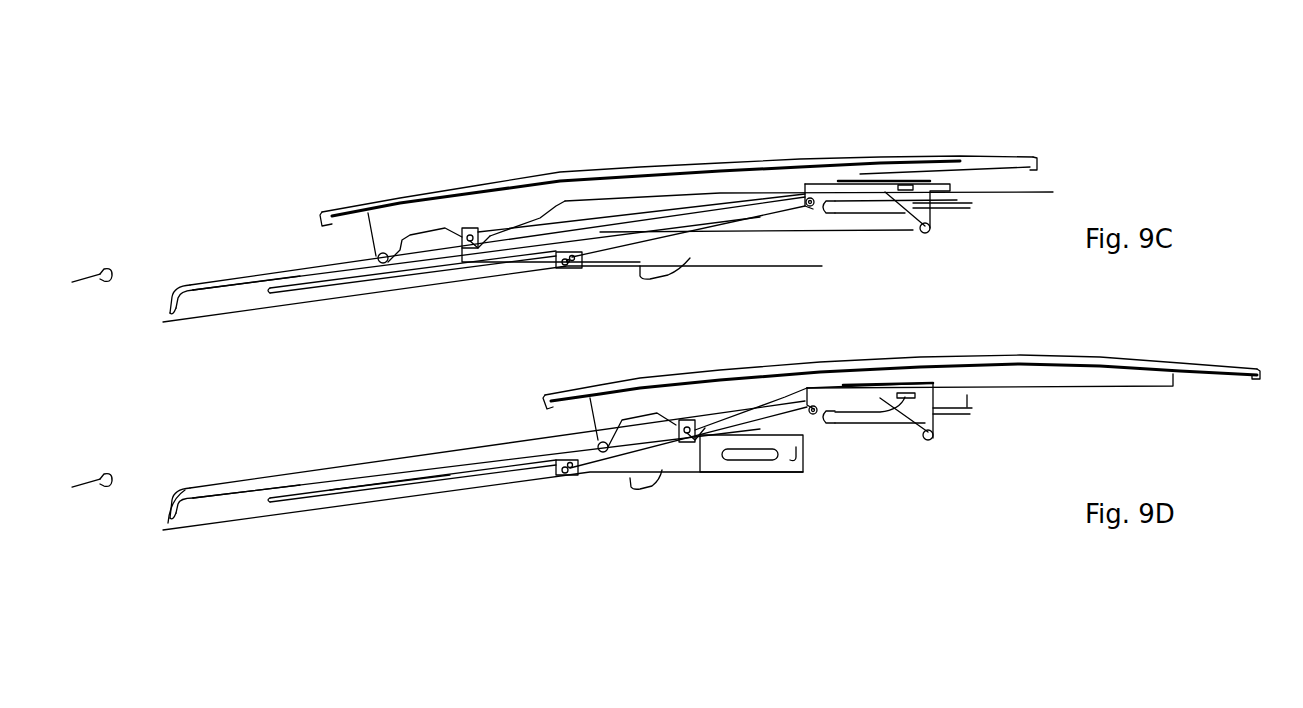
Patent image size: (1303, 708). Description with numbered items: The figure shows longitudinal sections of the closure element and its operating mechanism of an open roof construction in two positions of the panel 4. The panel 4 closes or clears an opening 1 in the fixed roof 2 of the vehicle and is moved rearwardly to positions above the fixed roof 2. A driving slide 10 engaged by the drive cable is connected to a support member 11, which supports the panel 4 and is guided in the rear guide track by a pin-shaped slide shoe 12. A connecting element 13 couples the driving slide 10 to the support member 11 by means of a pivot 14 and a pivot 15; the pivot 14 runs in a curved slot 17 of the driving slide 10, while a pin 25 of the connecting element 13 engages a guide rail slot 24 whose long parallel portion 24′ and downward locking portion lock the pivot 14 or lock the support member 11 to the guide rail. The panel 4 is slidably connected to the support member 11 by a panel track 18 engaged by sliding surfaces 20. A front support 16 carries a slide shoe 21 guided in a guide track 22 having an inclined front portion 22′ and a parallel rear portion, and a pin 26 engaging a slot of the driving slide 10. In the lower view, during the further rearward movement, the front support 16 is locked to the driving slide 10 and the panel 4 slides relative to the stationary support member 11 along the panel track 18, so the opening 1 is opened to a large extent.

In FIG. 9C, the roof opening 1 is at (157, 257).
In FIG. 9D, the fixed roof 2 is at (967, 407).
In FIG. 9C, the panel 4 is at (705, 163).
In FIG. 9D, the panel 4 is at (1118, 361).
In FIG. 9C, the driving slide 10 is at (470, 262).
In FIG. 9D, the driving slide 10 is at (720, 458).
In FIG. 9C, the support member 11 is at (1053, 193).
In FIG. 9D, the support member 11 is at (927, 420).
In FIG. 9C, the slide shoe 12 is at (930, 230).
In FIG. 9C, the connecting element 13 is at (650, 240).
In FIG. 9C, the pivot 14 is at (572, 265).
In FIG. 9D, the pivot 14 is at (572, 465).
In FIG. 9C, the pivot 15 is at (812, 198).
In FIG. 9D, the pivot 15 is at (812, 408).
In FIG. 9C, the front support 16 is at (388, 220).
In FIG. 9D, the front support 16 is at (617, 430).
In FIG. 9C, the curved slot 17 is at (575, 260).
In FIG. 9D, the curved slot 17 is at (800, 460).
In FIG. 9C, the panel track 18 is at (763, 192).
In FIG. 9D, the panel track 18 is at (1063, 390).
In FIG. 9C, the sliding surfaces 20 is at (925, 182).
In FIG. 9D, the sliding surfaces 20 is at (907, 395).
In FIG. 9C, the slide shoe 21 is at (373, 255).
In FIG. 9D, the slide shoe 21 is at (597, 442).
In FIG. 9C, the guide track 22 is at (492, 259).
In FIG. 9D, the guide track 22 is at (275, 470).
In FIG. 9D, the front portion of guide track 22′ is at (178, 511).
In FIG. 9D, the guide rail slot 24 is at (326, 496).
In FIG. 9C, the long parallel portion of guide rail slot 24′ is at (353, 287).
In FIG. 9D, the long parallel portion of guide rail slot 24′ is at (367, 487).
In FIG. 9C, the pin 25 is at (560, 262).
In FIG. 9D, the pin 25 is at (567, 467).
In FIG. 9C, the pin 26 is at (466, 233).
In FIG. 9D, the pin 26 is at (690, 443).